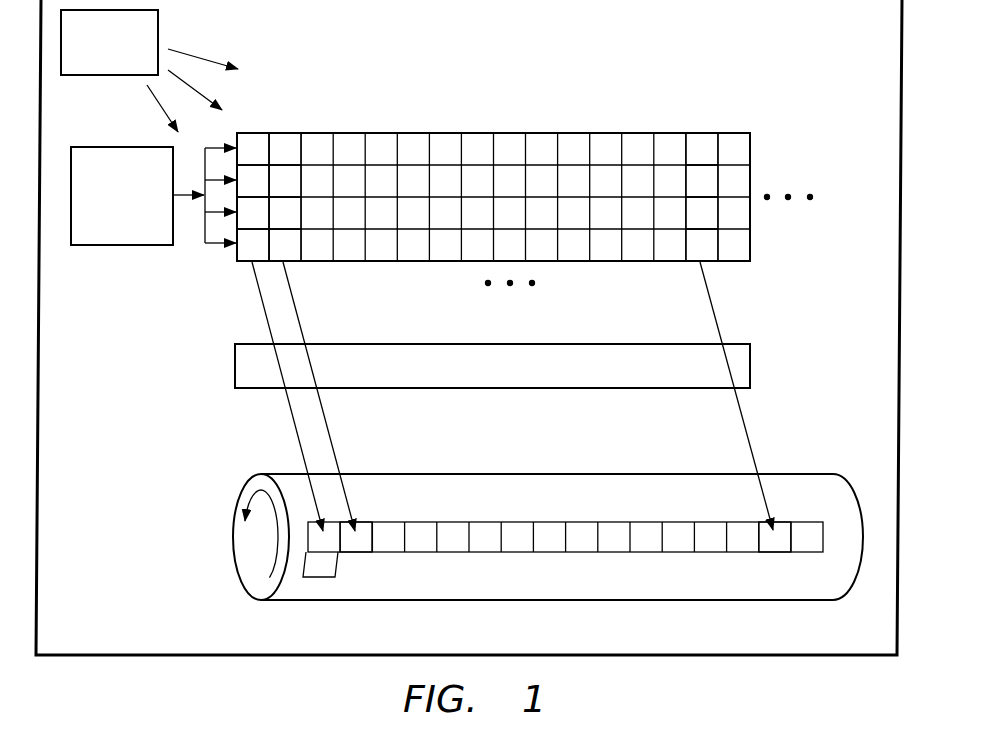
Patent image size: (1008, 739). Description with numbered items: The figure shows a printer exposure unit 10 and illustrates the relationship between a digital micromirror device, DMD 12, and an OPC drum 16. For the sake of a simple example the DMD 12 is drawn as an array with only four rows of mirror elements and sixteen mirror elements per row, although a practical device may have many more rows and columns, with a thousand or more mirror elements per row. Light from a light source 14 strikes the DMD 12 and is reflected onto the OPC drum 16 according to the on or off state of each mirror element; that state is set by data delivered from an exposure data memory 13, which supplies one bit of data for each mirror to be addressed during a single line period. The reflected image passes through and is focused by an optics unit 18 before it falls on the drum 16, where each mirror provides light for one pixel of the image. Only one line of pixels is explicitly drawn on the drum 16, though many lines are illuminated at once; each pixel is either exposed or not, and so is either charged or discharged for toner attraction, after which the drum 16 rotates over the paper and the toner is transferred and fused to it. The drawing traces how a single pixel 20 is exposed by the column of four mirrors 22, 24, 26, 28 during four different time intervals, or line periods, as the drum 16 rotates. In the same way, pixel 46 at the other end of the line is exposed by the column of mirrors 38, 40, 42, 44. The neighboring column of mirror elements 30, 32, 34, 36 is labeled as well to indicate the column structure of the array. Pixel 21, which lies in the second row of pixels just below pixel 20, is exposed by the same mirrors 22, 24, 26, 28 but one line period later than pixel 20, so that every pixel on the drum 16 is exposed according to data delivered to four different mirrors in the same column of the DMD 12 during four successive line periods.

The printer exposure unit 10 is at (114, 539).
The DMD 12 is at (637, 93).
The exposure data memory 13 is at (108, 247).
The light source 14 is at (110, 76).
The OPC drum 16 is at (805, 473).
The optics unit 18 is at (750, 367).
The pixel 20 is at (333, 540).
The pixel 21 is at (320, 567).
The mirror 22 is at (253, 245).
The mirror 24 is at (253, 213).
The mirror 26 is at (253, 181).
The mirror 28 is at (253, 149).
The mirror element 30 is at (285, 245).
The mirror element 32 is at (285, 213).
The mirror element 34 is at (285, 181).
The mirror element 36 is at (285, 149).
The mirror 38 is at (702, 245).
The mirror 40 is at (702, 213).
The mirror 42 is at (702, 181).
The mirror 44 is at (702, 149).
The pixel 46 is at (773, 545).